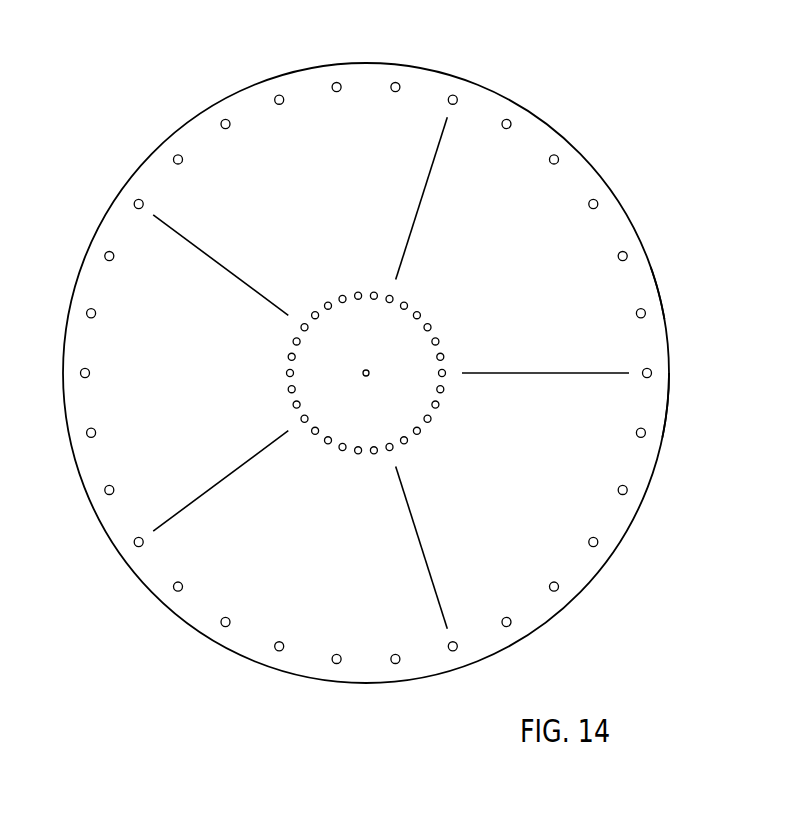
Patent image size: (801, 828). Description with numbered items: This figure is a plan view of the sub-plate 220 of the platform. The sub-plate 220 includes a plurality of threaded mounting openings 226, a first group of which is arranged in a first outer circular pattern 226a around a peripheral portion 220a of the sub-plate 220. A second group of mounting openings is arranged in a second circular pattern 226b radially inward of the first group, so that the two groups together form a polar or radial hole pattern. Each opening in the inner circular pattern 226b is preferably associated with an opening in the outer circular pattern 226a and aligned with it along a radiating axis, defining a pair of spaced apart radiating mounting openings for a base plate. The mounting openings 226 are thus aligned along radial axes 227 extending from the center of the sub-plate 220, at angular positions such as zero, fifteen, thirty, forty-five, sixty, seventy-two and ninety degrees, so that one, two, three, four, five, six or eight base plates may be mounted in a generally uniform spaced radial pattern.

The sub-plate 220 is at (510, 84).
The peripheral portion 220a is at (652, 407).
The threaded mounting openings 226 is at (555, 158).
The first outer circular pattern 226a is at (657, 293).
The second circular pattern 226b is at (428, 299).
The radial axes 227 is at (438, 596).